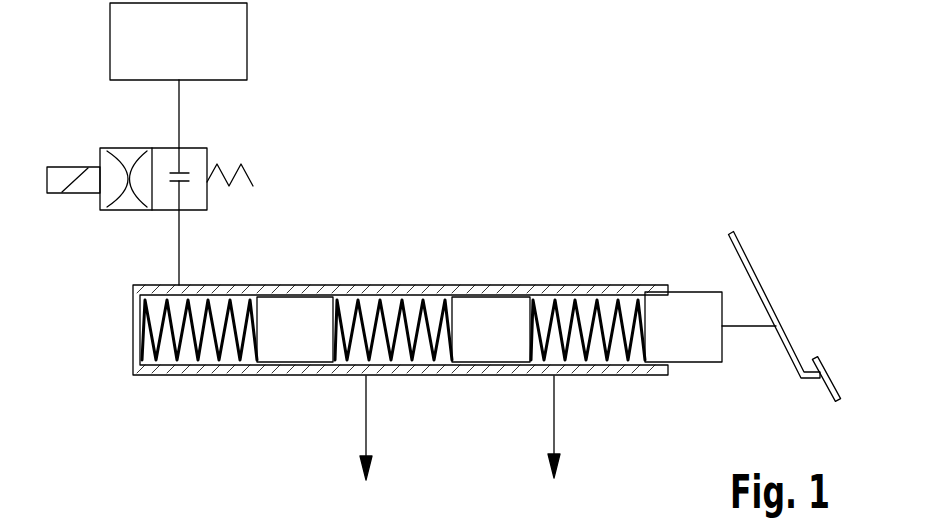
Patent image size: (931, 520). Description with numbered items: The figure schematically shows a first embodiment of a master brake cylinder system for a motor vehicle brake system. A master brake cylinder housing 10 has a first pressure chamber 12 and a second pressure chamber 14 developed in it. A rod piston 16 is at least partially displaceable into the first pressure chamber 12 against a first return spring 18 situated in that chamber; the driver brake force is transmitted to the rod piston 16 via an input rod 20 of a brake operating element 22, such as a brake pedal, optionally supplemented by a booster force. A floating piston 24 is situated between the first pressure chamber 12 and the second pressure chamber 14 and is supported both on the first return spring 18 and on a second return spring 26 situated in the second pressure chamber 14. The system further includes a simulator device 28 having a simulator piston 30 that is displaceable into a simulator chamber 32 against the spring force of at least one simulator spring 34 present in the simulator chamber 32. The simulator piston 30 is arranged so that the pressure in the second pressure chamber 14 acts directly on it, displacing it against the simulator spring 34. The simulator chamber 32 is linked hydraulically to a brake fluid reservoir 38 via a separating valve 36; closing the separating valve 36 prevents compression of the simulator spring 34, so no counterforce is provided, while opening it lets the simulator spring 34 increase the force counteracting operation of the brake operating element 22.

The master brake cylinder housing 10 is at (620, 288).
The first pressure chamber 12 is at (588, 326).
The second pressure chamber 14 is at (393, 327).
The rod piston 16 is at (686, 352).
The first return spring 18 is at (590, 345).
The input rod 20 is at (742, 327).
The brake operating element 22 is at (752, 270).
The floating piston 24 is at (504, 352).
The second return spring 26 is at (413, 350).
The simulator device 28 is at (394, 340).
The simulator piston 30 is at (278, 300).
The simulator chamber 32 is at (212, 350).
The simulator spring 34 is at (161, 370).
The separating valve 36 is at (190, 148).
The brake fluid reservoir 38 is at (247, 36).